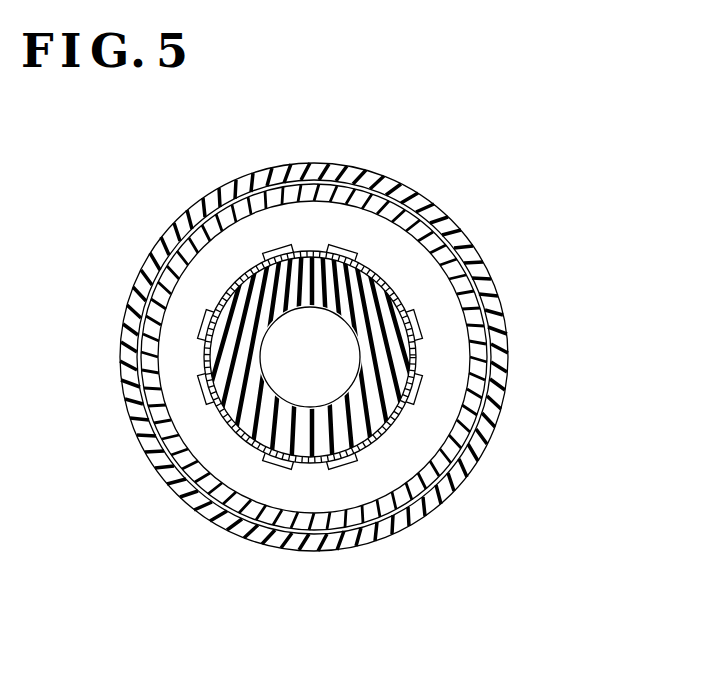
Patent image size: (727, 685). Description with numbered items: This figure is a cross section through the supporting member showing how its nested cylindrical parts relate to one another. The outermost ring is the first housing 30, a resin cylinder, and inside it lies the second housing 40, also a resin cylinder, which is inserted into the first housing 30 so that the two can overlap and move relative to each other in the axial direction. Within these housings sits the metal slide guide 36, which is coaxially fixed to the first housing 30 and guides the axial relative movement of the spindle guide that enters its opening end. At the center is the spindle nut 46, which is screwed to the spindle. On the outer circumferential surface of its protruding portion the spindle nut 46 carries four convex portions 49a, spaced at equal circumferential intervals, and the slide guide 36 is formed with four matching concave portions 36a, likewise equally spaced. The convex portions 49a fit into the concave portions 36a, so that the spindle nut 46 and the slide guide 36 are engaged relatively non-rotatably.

The first housing 30 is at (478, 350).
The second housing 40 is at (470, 240).
The slide guide 36 is at (288, 254).
The concave portions 36a is at (253, 278).
The convex portions 49a is at (207, 308).
The spindle nut 46 is at (205, 397).